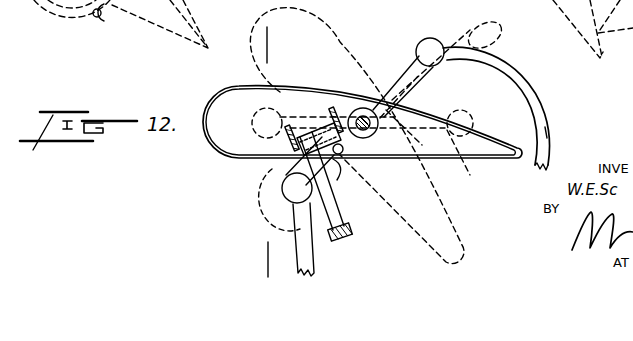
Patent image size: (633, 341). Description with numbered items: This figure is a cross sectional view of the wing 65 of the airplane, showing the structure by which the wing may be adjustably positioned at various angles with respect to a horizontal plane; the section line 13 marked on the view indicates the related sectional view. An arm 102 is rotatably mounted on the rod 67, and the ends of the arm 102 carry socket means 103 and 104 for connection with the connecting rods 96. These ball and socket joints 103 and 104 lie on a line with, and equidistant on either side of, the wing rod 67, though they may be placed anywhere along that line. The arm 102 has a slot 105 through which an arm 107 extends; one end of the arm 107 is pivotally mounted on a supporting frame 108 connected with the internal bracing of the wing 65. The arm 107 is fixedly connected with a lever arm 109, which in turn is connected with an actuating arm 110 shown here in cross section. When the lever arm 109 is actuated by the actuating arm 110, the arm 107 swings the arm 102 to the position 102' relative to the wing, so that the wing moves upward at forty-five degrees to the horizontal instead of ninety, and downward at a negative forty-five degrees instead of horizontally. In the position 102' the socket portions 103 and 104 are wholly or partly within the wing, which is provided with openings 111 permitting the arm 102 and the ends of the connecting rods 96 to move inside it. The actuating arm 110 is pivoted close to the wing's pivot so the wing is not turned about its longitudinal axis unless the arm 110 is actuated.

The section line 13- 13 is at (256, 41).
The wing 65 is at (234, 91).
The rod 67 is at (362, 116).
The connecting rods 96 is at (547, 133).
The arm 102 is at (390, 76).
The position of the arm 102' is at (319, 136).
The socket means 103 is at (440, 40).
The socket means 104 is at (284, 198).
The slot 105 is at (340, 162).
The arm 107 is at (337, 181).
The supporting frame 108 is at (300, 118).
The lever arm 109 is at (339, 203).
The actuating arm 110 is at (352, 241).
The openings 111 is at (463, 114).